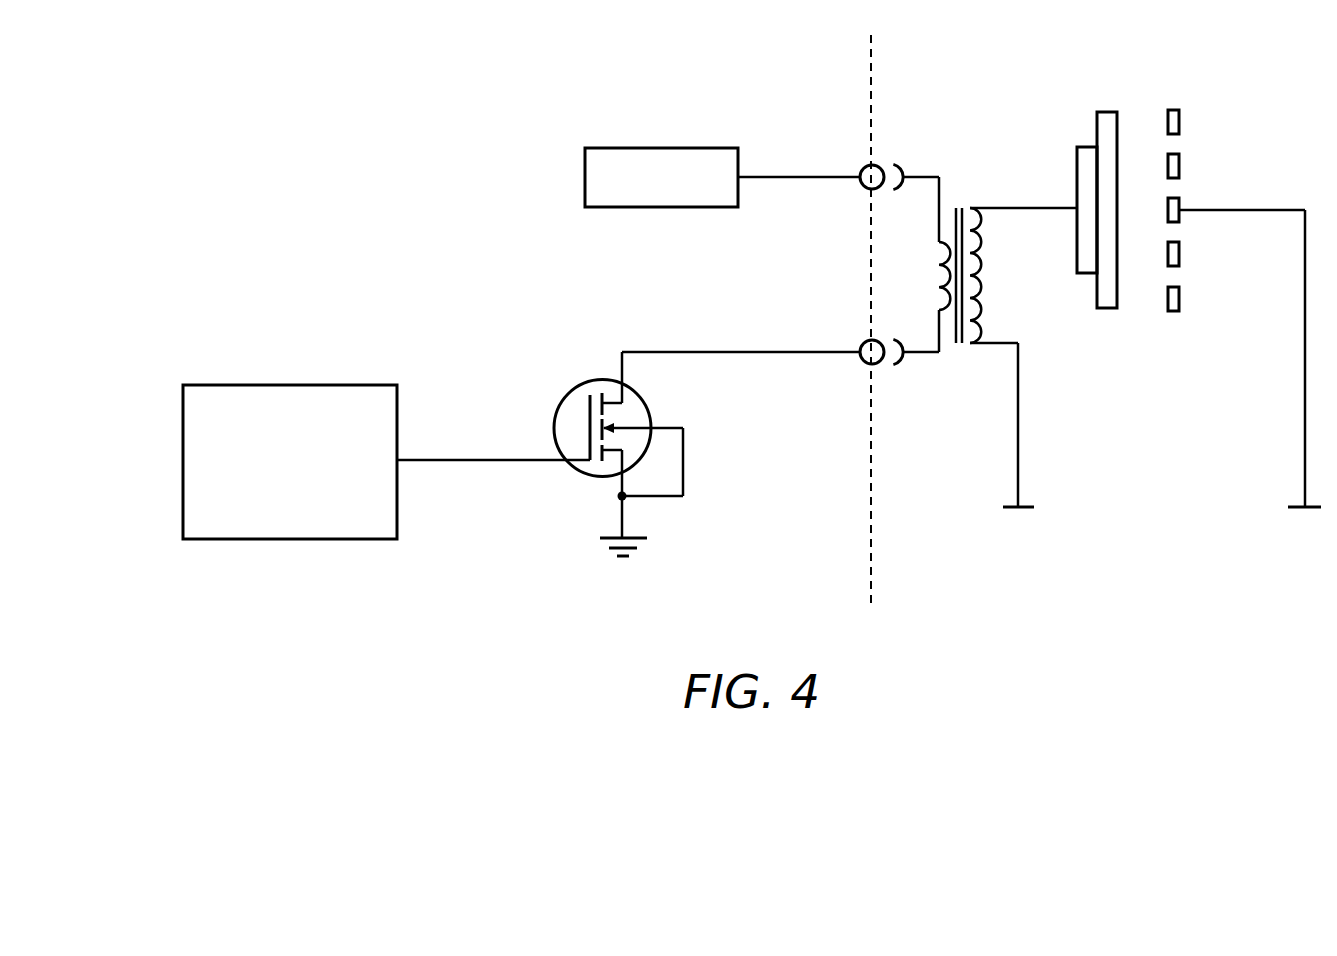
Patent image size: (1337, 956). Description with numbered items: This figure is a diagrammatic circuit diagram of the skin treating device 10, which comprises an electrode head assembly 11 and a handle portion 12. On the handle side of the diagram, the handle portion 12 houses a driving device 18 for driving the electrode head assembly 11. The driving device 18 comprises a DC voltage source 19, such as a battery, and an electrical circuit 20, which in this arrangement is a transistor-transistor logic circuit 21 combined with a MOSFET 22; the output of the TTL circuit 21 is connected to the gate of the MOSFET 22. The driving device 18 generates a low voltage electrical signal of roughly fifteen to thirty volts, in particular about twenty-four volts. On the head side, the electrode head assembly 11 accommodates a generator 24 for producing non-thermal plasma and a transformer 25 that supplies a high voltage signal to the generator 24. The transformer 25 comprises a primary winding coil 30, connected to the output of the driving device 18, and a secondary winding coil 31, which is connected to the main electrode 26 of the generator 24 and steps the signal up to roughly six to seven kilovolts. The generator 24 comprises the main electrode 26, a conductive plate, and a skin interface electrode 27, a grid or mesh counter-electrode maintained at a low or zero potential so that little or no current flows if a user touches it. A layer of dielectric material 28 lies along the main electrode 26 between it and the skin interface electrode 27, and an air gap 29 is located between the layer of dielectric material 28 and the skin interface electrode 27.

The device 10 is at (311, 194).
The electrode head assembly 11 is at (1245, 128).
The handle portion 12 is at (459, 265).
The driving device 18 is at (521, 524).
The DC voltage source 19 is at (713, 148).
The electrical circuit 20 is at (456, 628).
The transistor-transistor logic (TTL) circuit 21 is at (372, 385).
The metal oxide semiconductor field effect transistor (MOSFET) 22 is at (585, 475).
The generator 24 is at (1099, 181).
The transformer 25 is at (958, 175).
The main electrode 26 is at (1083, 147).
The skin interface electrode 27 is at (1174, 110).
The layer of dielectric material 28 is at (1109, 112).
The air gap 29 is at (1140, 157).
The primary winding coil 30 is at (940, 356).
The secondary winding coil 31 is at (970, 350).